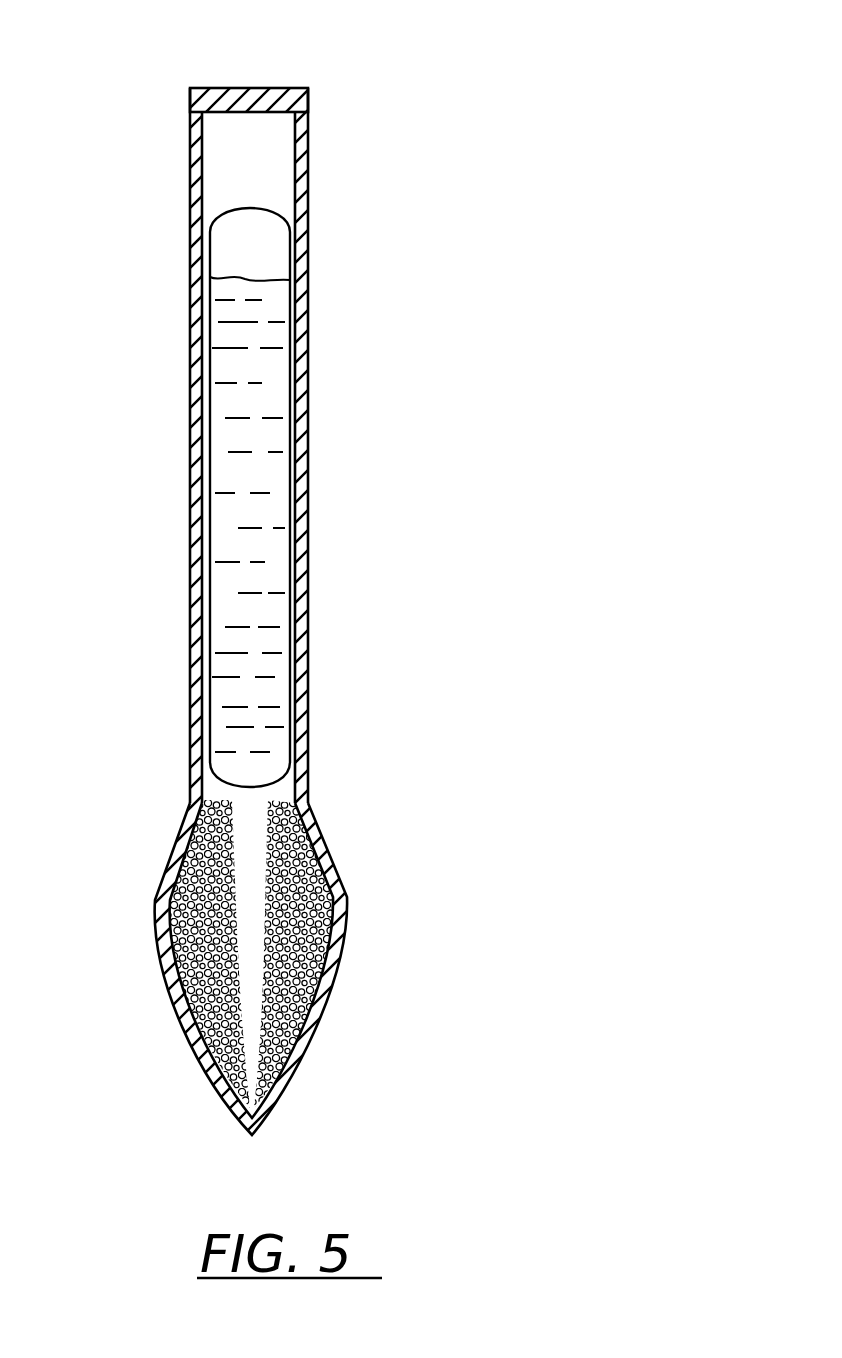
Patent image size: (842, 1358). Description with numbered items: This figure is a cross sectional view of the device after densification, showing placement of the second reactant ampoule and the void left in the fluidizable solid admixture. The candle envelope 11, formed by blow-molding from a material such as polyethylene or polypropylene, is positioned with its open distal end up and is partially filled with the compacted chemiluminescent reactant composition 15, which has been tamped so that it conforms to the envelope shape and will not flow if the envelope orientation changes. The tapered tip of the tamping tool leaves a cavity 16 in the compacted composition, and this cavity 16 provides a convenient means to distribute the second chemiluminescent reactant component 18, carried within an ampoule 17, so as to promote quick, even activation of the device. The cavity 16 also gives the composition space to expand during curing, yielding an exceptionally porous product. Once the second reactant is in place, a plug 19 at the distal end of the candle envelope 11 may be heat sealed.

The candle envelope 11 is at (192, 598).
The plug 19 is at (265, 88).
The ampoule 17 is at (265, 235).
The second chemiluminescent reactant component 18 is at (252, 401).
The compacted chemiluminescent reactant composition 15 is at (320, 845).
The cavity 16 is at (250, 900).